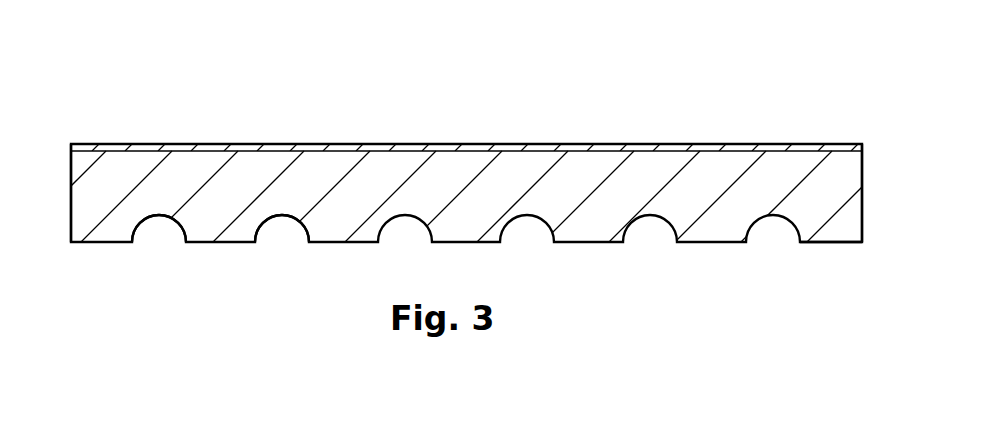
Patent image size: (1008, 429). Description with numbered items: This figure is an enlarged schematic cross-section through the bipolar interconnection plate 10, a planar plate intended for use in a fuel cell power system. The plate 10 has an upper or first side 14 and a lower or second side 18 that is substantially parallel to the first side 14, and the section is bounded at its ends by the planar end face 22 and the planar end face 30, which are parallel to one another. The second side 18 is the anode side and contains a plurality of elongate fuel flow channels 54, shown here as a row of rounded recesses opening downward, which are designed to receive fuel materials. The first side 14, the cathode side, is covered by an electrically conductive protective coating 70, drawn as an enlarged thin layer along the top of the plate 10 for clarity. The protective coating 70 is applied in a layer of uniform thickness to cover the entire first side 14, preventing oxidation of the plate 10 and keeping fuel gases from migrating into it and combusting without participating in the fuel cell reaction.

The bipolar interconnection plate 10 is at (817, 93).
The first side 14 is at (108, 152).
The protective coating 70 is at (408, 142).
The end face 30 is at (71, 187).
The end face 22 is at (862, 194).
The second side 18 is at (818, 243).
The fuel flow channels 54 is at (158, 243).